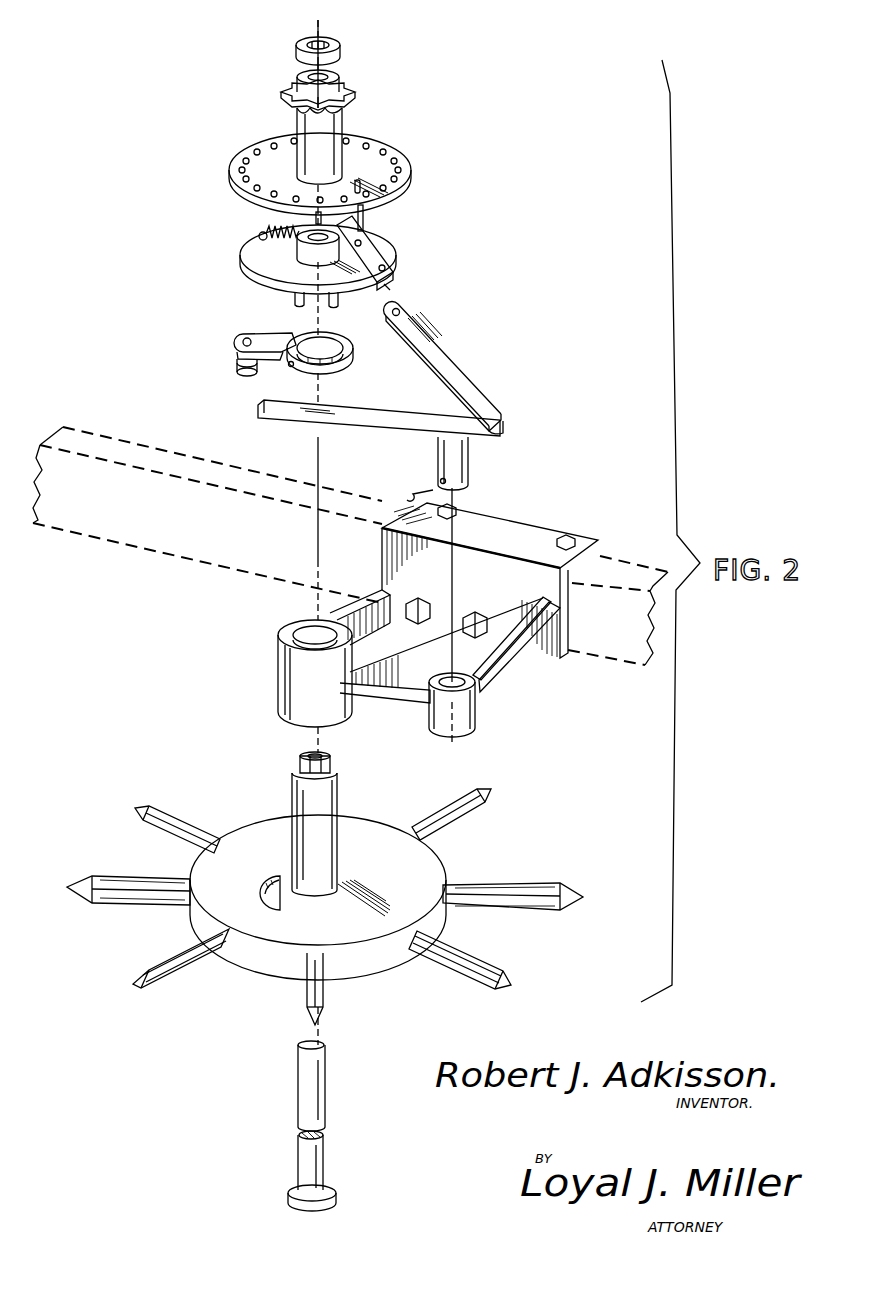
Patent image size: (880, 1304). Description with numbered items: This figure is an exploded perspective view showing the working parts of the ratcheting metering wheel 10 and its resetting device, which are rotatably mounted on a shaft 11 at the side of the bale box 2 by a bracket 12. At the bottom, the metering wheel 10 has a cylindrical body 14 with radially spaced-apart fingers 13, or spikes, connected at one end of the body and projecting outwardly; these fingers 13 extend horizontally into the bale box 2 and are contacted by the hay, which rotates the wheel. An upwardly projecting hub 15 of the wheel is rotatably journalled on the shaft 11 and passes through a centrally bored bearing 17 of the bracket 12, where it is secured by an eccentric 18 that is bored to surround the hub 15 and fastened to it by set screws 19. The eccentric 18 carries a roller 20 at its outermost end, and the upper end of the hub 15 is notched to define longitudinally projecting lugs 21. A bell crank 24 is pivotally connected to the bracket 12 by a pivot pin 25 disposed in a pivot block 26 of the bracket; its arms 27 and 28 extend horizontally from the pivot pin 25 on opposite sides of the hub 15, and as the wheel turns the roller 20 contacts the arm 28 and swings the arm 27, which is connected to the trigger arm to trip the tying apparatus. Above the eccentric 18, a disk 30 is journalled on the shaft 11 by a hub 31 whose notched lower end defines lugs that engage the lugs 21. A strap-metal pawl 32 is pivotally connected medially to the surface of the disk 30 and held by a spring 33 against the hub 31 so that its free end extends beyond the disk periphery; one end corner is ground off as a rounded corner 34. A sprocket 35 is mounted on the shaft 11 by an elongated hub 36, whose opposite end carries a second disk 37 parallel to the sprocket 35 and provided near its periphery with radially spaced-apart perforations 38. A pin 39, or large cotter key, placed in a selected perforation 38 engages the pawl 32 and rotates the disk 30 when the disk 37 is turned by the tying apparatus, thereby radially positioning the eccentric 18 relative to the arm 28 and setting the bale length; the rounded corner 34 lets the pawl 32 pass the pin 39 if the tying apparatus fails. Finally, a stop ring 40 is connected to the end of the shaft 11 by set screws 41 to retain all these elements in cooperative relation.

The bale box 2 is at (193, 567).
The ratcheting metering wheel 10 is at (392, 993).
The shaft 11 is at (326, 1097).
The bracket 12 is at (542, 516).
The fingers 13 is at (462, 833).
The body 14 is at (402, 881).
The hub 15 is at (293, 800).
The bearing 17 is at (278, 690).
The eccentric 18 is at (359, 352).
The set screws 19 is at (295, 368).
The roller 20 is at (242, 377).
The lugs 21 is at (332, 762).
The bell crank 24 is at (506, 417).
The pivot pin 25 is at (470, 464).
The pivot block 26 is at (470, 735).
The arm 27 is at (452, 361).
The arm 28 is at (407, 413).
The disk 30 is at (402, 243).
The hub 31 is at (296, 307).
The pawl 32 is at (380, 288).
The spring 33 is at (278, 233).
The rounded corner 34 is at (395, 278).
The sprocket 35 is at (355, 87).
The elongated hub 36 is at (297, 121).
The second disk 37 is at (415, 173).
The perforations 38 is at (240, 176).
The pin 39 is at (368, 216).
The stop ring 40 is at (343, 46).
The set screws 41 is at (303, 62).